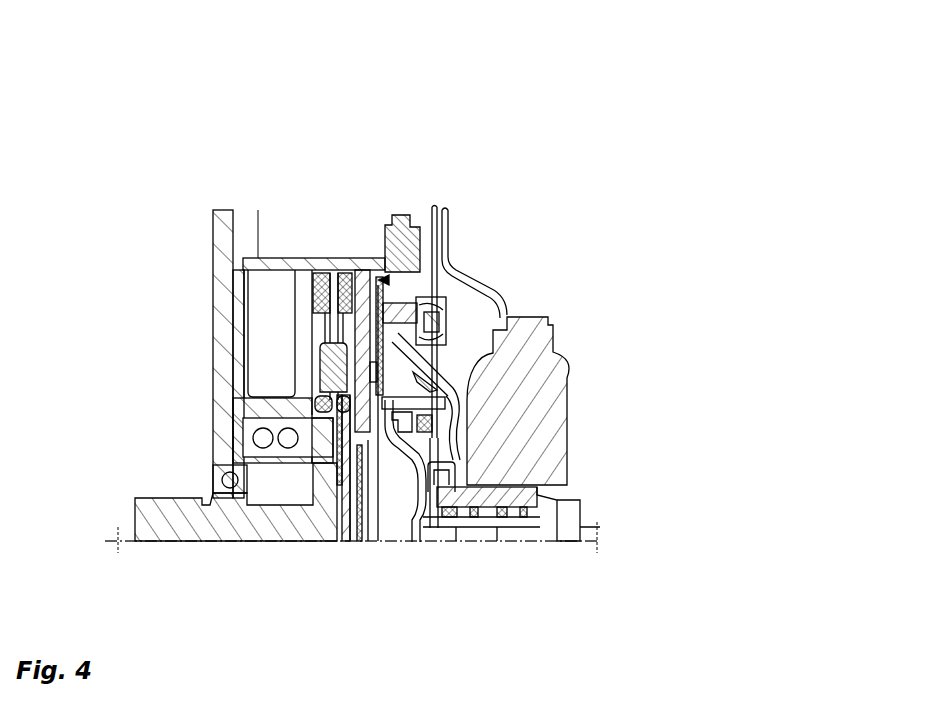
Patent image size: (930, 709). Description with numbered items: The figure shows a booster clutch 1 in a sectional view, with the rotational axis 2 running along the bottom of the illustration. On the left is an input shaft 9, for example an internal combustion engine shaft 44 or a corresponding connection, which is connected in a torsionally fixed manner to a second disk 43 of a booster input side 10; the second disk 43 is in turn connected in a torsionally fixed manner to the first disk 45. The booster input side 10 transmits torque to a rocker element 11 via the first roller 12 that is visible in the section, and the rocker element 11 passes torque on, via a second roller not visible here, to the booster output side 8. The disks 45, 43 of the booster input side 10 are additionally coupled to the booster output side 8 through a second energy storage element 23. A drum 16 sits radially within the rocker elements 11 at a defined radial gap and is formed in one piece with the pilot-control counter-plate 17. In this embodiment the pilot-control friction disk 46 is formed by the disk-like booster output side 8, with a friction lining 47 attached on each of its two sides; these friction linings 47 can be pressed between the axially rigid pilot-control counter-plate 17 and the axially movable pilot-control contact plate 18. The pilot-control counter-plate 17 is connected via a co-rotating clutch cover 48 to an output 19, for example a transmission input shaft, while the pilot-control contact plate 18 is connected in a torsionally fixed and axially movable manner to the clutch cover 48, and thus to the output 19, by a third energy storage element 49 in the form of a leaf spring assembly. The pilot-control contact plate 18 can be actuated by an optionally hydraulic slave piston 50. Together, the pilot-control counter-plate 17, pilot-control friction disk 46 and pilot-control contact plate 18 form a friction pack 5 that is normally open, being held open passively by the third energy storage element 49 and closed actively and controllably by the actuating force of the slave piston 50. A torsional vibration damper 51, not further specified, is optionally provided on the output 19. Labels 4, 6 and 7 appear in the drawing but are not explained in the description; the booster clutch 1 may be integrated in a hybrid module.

The booster clutch 1 is at (728, 65).
The rotational axis 2 is at (128, 542).
The release bearing 4 is at (425, 272).
The friction pack 5 is at (372, 80).
The piston assembly 6 is at (362, 204).
The pilot-control friction disk 46 is at (410, 130).
The cylinder housing 7 is at (272, 130).
The booster output side 8 is at (380, 276).
The input shaft 9 is at (236, 542).
The internal combustion engine shaft 44 is at (217, 543).
The booster input side 10 is at (447, 590).
The rocker element 11 is at (327, 417).
The first roller 12 is at (320, 362).
The drum 16 is at (335, 435).
The pilot-control counter-plate 17 is at (283, 262).
The pilot-control contact plate 18 is at (243, 270).
The output 19 is at (570, 543).
The second energy storage element 23 is at (380, 388).
The second disk 43 is at (372, 455).
The first disk 45 is at (325, 320).
The friction lining 47 is at (340, 272).
The co-rotating clutch cover 48 is at (395, 213).
The third energy storage element 49 is at (503, 317).
The slave piston 50 is at (487, 523).
The torsional vibration damper 51 is at (567, 374).